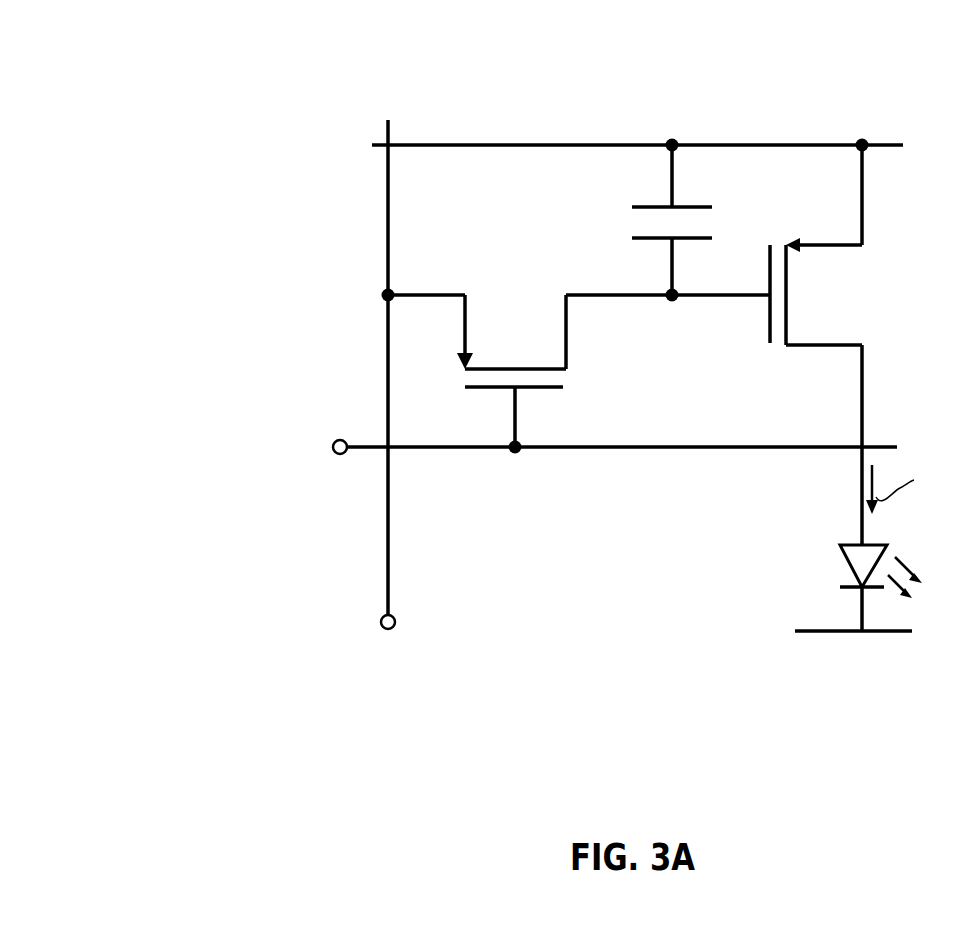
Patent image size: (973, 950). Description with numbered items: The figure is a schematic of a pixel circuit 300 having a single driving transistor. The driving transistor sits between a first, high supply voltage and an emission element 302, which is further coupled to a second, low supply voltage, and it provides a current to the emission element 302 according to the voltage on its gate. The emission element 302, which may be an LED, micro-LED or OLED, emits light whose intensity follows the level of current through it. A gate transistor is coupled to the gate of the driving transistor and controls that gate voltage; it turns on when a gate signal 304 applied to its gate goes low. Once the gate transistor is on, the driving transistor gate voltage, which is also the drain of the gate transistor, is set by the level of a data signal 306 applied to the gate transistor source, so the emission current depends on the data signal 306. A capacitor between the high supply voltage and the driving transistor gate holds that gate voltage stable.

The pixel circuit 300 is at (91, 89).
The emission element 302 is at (845, 553).
The gate signal 304 is at (332, 447).
The data signal 306 is at (380, 622).